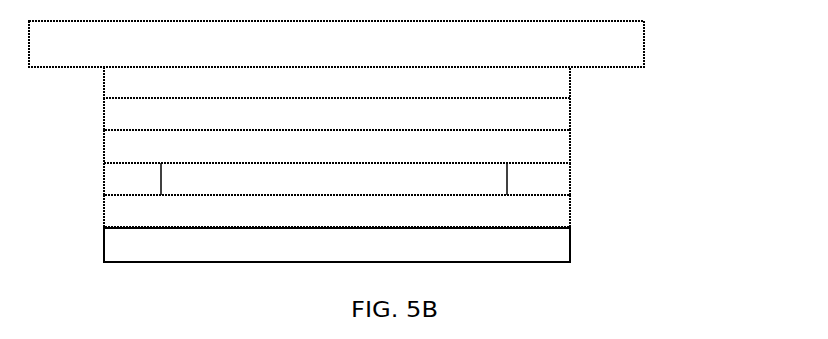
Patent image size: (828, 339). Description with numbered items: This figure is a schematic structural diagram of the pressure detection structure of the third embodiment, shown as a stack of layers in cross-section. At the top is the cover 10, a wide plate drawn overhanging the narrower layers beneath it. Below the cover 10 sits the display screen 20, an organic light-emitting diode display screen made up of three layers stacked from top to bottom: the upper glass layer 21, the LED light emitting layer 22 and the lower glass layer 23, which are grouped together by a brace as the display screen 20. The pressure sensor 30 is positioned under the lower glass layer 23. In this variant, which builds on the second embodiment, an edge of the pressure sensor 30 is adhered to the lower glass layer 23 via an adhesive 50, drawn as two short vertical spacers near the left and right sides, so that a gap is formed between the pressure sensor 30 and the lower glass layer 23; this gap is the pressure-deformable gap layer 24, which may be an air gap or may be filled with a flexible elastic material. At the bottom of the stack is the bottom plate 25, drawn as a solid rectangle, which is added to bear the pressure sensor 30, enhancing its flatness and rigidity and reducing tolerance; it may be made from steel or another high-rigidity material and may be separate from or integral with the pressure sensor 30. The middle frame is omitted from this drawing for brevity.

The cover 10 is at (626, 46).
The display screen 20 is at (411, 115).
The upper glass layer 21 is at (554, 82).
The LED light emitting layer 22 is at (557, 117).
The lower glass layer 23 is at (554, 147).
The gap layer 24 is at (202, 187).
The bottom plate 25 is at (560, 245).
The pressure sensor 30 is at (560, 213).
The adhesive 50 is at (128, 178).